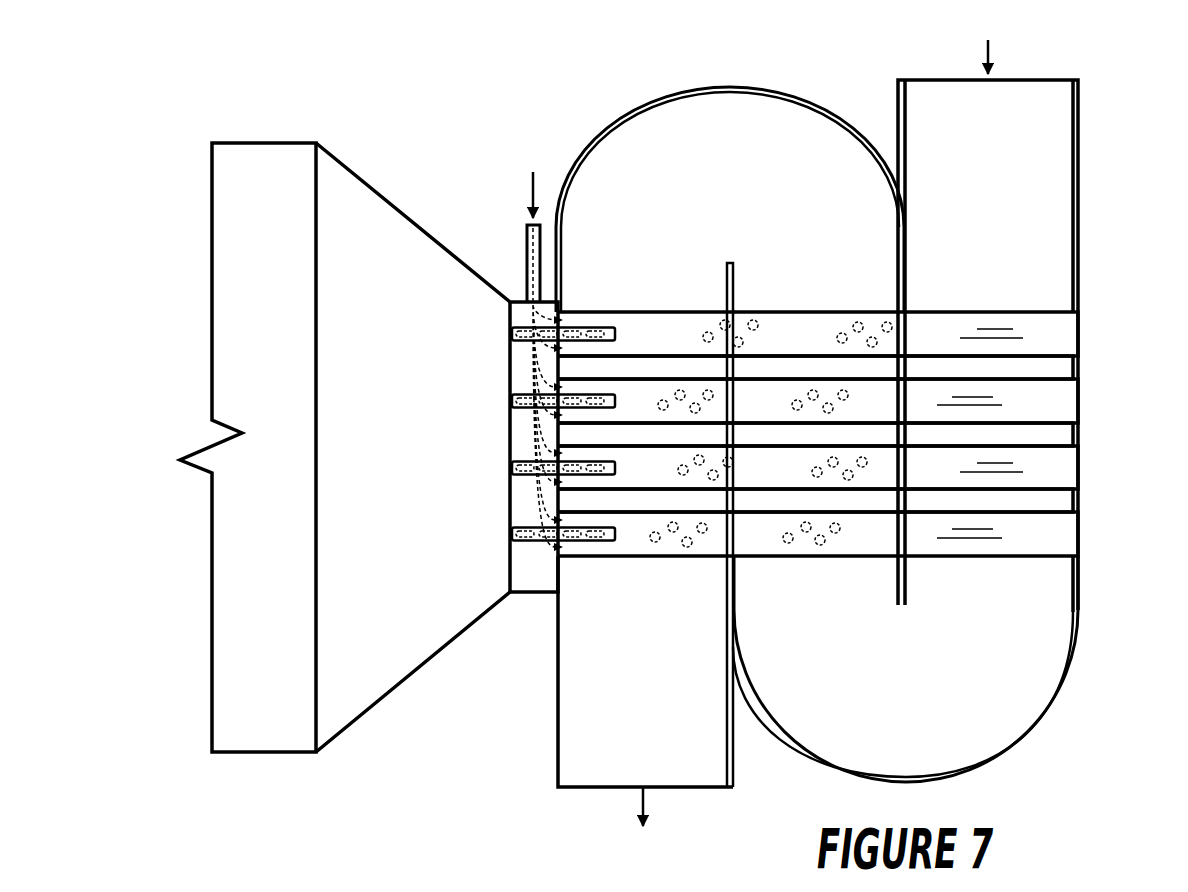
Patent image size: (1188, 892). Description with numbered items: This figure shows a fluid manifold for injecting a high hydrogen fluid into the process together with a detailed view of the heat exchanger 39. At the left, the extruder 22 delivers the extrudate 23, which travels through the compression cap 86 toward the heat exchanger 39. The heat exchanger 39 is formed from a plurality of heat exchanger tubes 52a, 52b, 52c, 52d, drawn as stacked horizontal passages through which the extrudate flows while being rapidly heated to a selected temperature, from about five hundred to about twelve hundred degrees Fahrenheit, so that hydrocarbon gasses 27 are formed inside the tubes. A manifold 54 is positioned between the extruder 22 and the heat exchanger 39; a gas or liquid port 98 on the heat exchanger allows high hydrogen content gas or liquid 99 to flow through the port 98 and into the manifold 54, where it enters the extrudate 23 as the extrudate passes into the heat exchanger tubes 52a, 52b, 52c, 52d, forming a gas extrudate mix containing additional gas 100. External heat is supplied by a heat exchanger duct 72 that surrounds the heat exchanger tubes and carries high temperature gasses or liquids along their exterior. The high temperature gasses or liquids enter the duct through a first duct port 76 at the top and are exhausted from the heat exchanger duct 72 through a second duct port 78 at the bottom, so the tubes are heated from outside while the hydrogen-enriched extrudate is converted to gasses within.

The extruder 22 is at (263, 142).
The compression cap 86 is at (408, 216).
The manifold 54 is at (541, 594).
The gas or liquid port 98 is at (527, 232).
The high hydrogen content gas or liquid 99 is at (528, 272).
The heat exchanger 39 is at (572, 82).
The extrudate 23 is at (594, 327).
The heat exchanger tube 52a is at (1078, 335).
The heat exchanger tube 52b is at (1078, 400).
The heat exchanger tube 52c is at (1078, 467).
The heat exchanger tube 52d is at (1078, 533).
The hydrocarbon gasses 27 is at (995, 330).
The gas extrudate mix containing additional gas 100 is at (752, 325).
The first duct port 76 is at (988, 50).
The second duct port 78 is at (646, 800).
The heat exchanger duct 72 is at (985, 755).